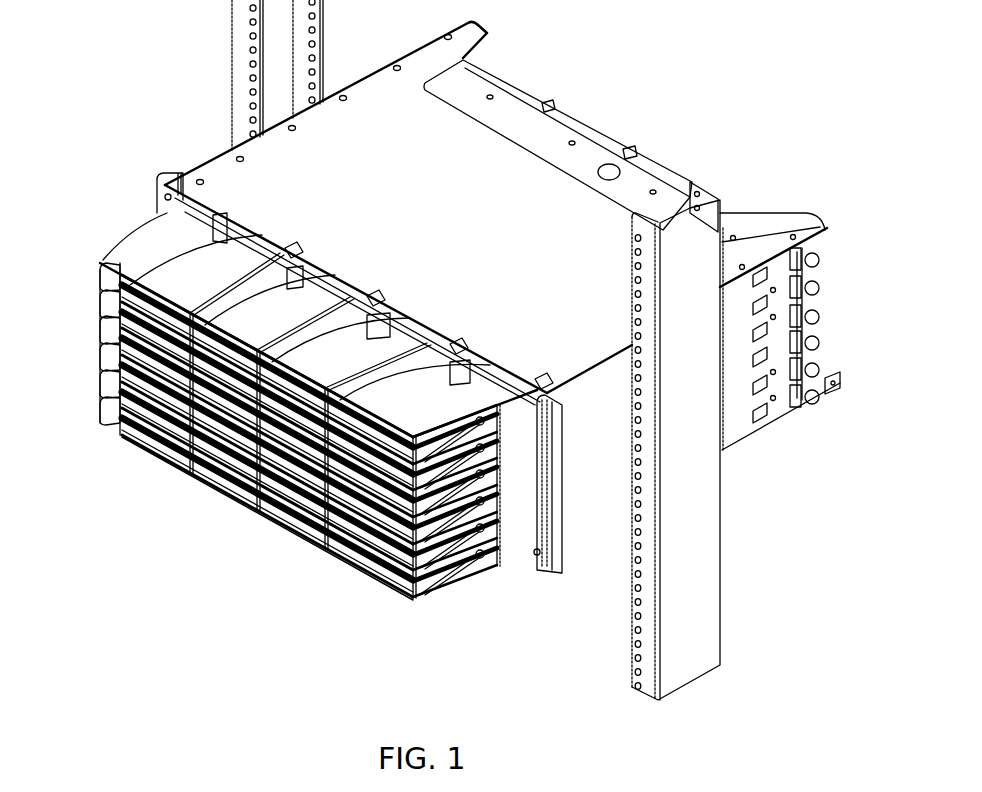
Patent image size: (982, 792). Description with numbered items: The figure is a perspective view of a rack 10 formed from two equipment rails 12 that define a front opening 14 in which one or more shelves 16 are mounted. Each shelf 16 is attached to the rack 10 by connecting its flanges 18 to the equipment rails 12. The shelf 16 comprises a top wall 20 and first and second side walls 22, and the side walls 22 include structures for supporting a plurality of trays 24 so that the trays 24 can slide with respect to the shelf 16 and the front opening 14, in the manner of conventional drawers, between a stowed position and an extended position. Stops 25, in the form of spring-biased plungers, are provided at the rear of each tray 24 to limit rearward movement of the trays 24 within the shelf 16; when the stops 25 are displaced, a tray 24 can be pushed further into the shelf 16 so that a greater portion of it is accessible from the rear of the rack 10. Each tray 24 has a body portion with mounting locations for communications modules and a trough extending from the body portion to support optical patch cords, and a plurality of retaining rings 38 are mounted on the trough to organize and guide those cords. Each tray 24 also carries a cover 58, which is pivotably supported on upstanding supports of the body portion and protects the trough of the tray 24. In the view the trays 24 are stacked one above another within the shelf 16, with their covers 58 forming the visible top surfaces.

The rack 10 is at (182, 606).
The equipment rail 12 is at (708, 613).
The front opening 14 is at (545, 635).
The shelf 16 is at (604, 135).
The flange 18 is at (160, 192).
The top wall 20 is at (461, 214).
The side wall 22 is at (738, 424).
The tray 24 is at (502, 545).
The stop 25 is at (822, 316).
The retaining ring 38 is at (428, 591).
The cover 58 is at (158, 261).